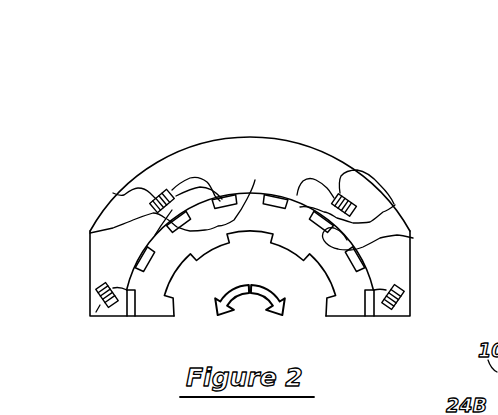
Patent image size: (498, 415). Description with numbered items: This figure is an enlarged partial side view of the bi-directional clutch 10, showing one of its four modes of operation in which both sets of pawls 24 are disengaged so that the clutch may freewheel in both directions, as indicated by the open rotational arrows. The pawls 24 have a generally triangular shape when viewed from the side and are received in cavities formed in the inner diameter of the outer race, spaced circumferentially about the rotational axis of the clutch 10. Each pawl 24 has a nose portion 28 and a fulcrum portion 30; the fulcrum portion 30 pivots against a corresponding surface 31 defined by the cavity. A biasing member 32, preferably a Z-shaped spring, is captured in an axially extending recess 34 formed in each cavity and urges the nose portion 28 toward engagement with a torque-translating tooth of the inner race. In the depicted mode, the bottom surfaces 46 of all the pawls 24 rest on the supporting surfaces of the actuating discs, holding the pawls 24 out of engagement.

The clutch 10 is at (231, 112).
The pawl 24 is at (325, 203).
The nose portion 28 is at (90, 233).
The fulcrum portion 30 is at (177, 190).
The surface 31 is at (172, 192).
The biasing member 32 is at (113, 193).
The recess 34 is at (367, 170).
The bottom surface 46 is at (255, 180).